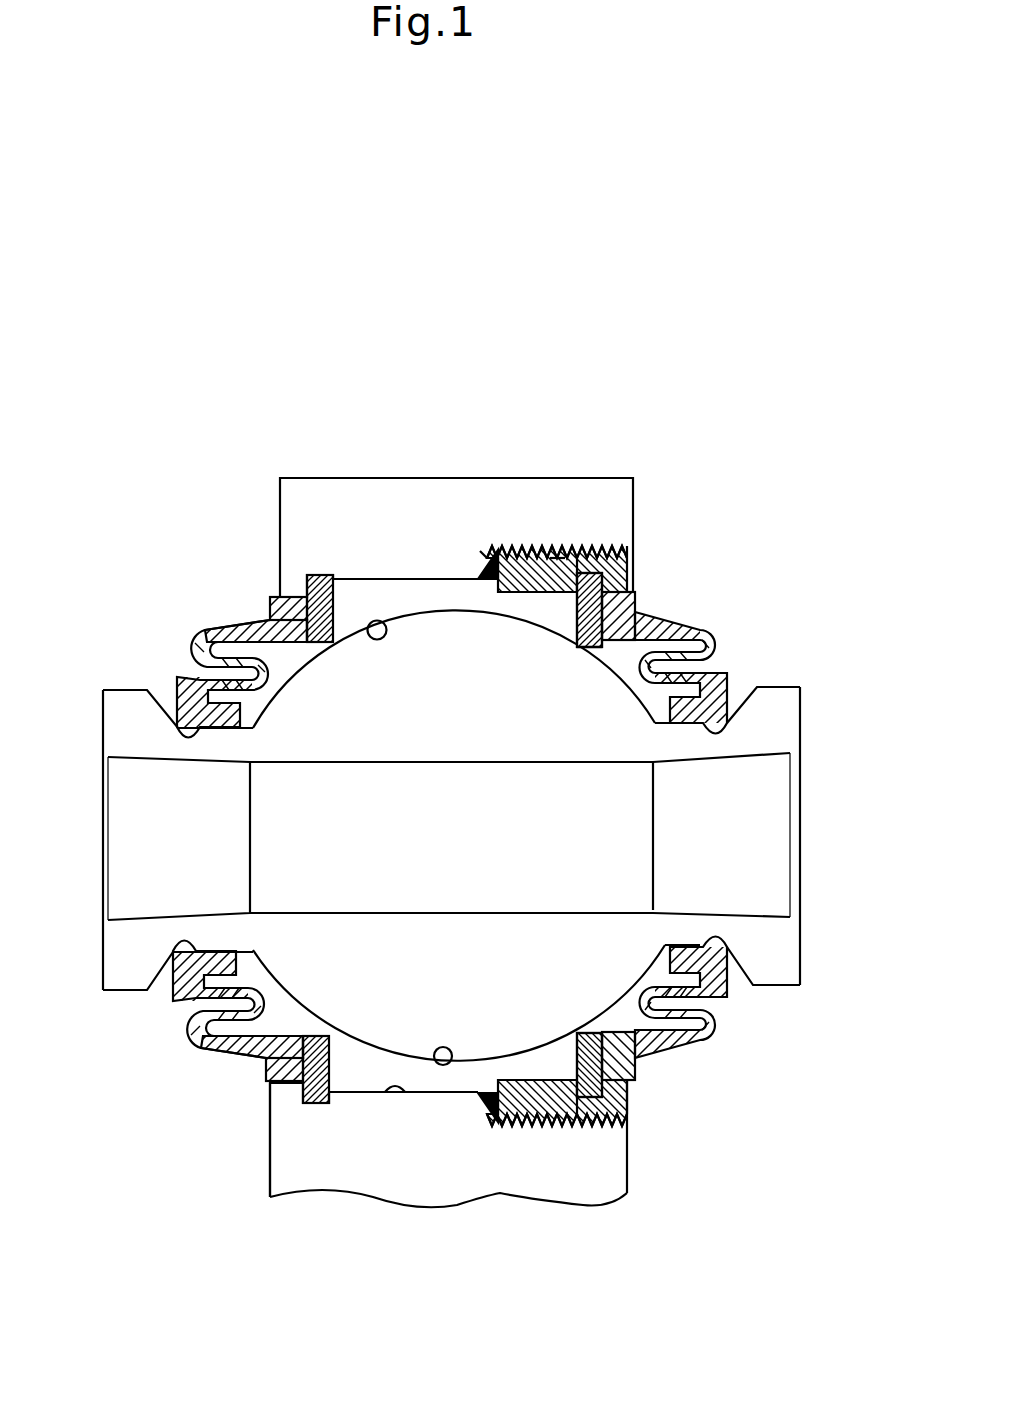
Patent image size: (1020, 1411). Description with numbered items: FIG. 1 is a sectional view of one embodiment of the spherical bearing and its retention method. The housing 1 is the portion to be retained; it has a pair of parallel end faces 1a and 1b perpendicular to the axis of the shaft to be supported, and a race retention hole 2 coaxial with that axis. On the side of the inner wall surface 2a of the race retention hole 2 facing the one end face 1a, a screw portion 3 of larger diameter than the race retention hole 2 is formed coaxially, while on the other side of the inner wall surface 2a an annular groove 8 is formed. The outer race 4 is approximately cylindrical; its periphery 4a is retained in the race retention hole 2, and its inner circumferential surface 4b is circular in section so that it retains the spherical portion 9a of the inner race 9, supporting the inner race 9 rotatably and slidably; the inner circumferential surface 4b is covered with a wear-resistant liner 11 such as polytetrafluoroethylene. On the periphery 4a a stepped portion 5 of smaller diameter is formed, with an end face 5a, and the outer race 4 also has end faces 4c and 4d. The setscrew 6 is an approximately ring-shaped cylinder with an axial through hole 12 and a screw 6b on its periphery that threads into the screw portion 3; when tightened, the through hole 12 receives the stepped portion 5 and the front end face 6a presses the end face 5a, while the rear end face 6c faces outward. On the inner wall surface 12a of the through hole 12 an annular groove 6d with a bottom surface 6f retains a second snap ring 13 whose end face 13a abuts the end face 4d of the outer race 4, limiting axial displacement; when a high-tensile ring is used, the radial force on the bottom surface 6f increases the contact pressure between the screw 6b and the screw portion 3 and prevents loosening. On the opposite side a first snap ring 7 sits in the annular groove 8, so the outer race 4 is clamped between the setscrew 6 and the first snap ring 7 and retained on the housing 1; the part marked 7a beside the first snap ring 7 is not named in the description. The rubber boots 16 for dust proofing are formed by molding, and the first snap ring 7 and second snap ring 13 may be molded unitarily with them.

The housing 1 is at (406, 1196).
The end face of housing 1a is at (628, 1176).
The end face of housing 1b is at (270, 1172).
The race retention hole 2 is at (418, 1078).
The inner wall surface of race retention hole 2a is at (393, 1090).
The screw portion 3 is at (630, 1100).
The outer race 4 is at (420, 566).
The periphery of outer race 4a is at (376, 579).
The inner circumferential surface of outer race 4b is at (370, 621).
The end face of outer race 4c is at (268, 610).
The end face of outer race 4d is at (636, 612).
The stepped portion 5 is at (565, 558).
The end face of stepped portion 5a is at (496, 556).
The setscrew 6 is at (600, 545).
The front end face of setscrew 6a is at (480, 550).
The screw of setscrew 6b is at (557, 553).
The rear end face of setscrew 6c is at (630, 548).
The annular groove of setscrew 6d is at (636, 1067).
The bottom surface of annular groove 6f is at (552, 1126).
The first snap ring 7 is at (275, 595).
The seal strip 7a is at (305, 575).
The annular groove 8 is at (303, 1090).
The inner race 9 is at (125, 990).
The spherical portion of inner race 9a is at (370, 1058).
The liner 11 is at (448, 1066).
The through hole of setscrew 12 is at (520, 1063).
The inner wall surface of through hole 12a is at (572, 1078).
The second snap ring 13 is at (590, 648).
The end face of second snap ring 13a is at (575, 630).
The rubber boots 16 is at (215, 620).